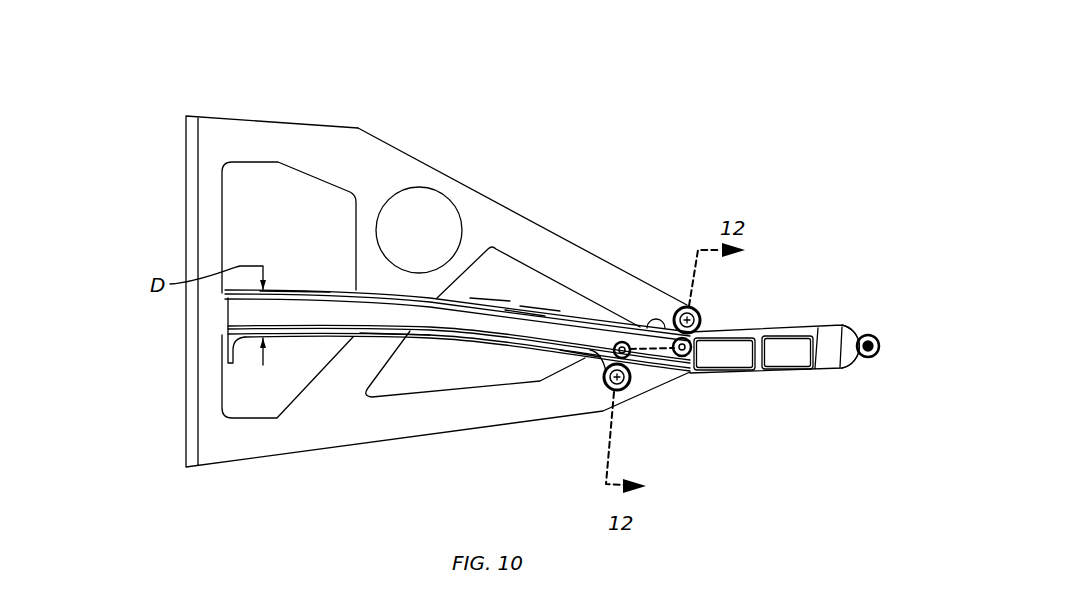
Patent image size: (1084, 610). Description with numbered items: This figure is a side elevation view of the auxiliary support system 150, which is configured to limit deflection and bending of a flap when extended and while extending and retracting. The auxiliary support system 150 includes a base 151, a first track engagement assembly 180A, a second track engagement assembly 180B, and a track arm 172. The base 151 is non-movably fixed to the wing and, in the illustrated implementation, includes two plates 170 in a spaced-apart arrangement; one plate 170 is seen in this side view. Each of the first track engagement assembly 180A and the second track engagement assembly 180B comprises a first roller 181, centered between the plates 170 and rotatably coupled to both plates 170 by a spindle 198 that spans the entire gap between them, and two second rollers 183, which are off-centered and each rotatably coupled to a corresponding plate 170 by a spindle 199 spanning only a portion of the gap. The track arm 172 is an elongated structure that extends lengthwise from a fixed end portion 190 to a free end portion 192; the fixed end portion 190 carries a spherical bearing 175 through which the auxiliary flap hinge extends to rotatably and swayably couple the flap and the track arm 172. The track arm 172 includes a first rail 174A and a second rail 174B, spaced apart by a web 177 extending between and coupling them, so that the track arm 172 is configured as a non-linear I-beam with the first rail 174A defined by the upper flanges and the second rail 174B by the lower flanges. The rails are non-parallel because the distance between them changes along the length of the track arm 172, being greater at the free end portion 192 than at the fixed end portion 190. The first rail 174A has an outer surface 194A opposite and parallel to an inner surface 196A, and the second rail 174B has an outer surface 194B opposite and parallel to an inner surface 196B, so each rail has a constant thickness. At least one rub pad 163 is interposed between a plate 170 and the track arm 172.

The plate 170 is at (220, 143).
The base 151 is at (410, 147).
The auxiliary support system 150 is at (490, 145).
The outer surface 194A is at (447, 298).
The outer surface 194B is at (275, 338).
The free end portion 192 is at (235, 314).
The inner surface 196A is at (306, 296).
The inner surface 196B is at (388, 322).
The track arm 172 is at (490, 287).
The web 177 is at (528, 328).
The first rail 174A is at (540, 312).
The second rail 174B is at (587, 362).
The rub pad 163 is at (658, 316).
The spindle 199 is at (585, 320).
The second roller 183 is at (621, 340).
The fixed end portion 190 is at (877, 323).
The spherical bearing 175 is at (870, 352).
The first track engagement assembly 180A is at (700, 305).
The second track engagement assembly 180B is at (622, 404).
The spindle 198 is at (703, 322).
The first roller 181 is at (690, 304).